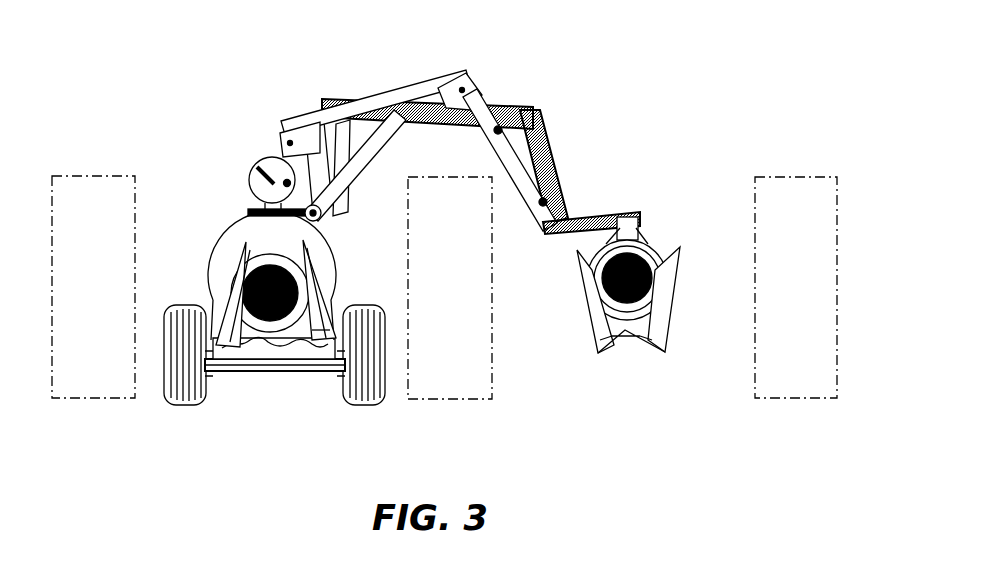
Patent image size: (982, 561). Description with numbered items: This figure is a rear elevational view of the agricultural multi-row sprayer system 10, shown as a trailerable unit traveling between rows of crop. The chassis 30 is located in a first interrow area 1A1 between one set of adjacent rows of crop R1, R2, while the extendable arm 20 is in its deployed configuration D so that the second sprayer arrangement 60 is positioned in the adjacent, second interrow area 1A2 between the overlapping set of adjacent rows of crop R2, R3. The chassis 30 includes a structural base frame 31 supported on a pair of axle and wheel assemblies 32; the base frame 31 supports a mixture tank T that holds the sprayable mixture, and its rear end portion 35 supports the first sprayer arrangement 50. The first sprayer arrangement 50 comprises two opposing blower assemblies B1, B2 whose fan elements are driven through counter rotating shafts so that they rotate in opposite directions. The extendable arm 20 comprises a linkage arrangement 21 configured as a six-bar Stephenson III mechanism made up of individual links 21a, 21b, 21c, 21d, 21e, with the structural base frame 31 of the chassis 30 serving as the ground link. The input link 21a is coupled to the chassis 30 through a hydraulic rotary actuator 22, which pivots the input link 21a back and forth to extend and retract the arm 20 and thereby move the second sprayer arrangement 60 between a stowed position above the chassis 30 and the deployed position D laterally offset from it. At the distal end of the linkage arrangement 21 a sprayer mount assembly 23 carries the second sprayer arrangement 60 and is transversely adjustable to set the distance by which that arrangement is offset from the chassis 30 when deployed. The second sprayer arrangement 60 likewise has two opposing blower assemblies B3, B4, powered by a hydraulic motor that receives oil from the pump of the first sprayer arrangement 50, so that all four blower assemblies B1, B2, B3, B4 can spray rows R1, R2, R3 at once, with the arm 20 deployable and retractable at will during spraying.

The agricultural multi-row sprayer system 10 is at (267, 86).
The first interrow area 1A1 is at (205, 148).
The second interrow area 1A2 is at (680, 118).
The extendable arm 20 is at (580, 56).
The linkage arrangement 21 is at (556, 110).
The input link 21a is at (348, 170).
The link 21b is at (486, 104).
The link 21c is at (320, 133).
The link 21d is at (552, 163).
The link 21e is at (383, 100).
The hydraulic rotary actuator 22 is at (282, 150).
The sprayer mount assembly 23 is at (603, 204).
The chassis 30 is at (200, 412).
The structural base frame 31 is at (320, 375).
The axle and wheel assemblies 32 is at (164, 398).
The rear end portion 35 is at (290, 372).
The first sprayer arrangement 50 is at (287, 262).
The second sprayer arrangement 60 is at (655, 218).
The mixture tank T is at (256, 218).
The deployed configuration D is at (657, 240).
The blower assembly B1 is at (228, 378).
The blower assembly B2 is at (326, 294).
The blower assembly B3 is at (609, 336).
The blower assembly B4 is at (640, 340).
The row of crop R1 is at (136, 244).
The row of crop R2 is at (493, 244).
The row of crop R3 is at (838, 246).